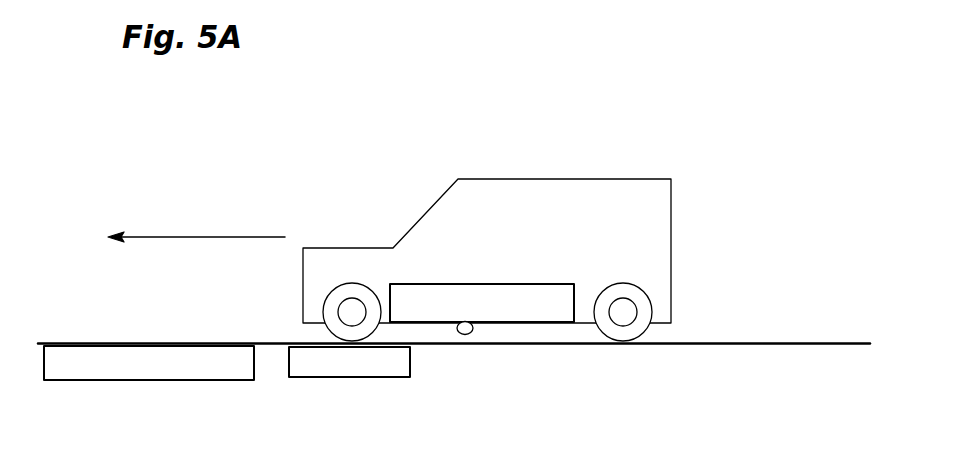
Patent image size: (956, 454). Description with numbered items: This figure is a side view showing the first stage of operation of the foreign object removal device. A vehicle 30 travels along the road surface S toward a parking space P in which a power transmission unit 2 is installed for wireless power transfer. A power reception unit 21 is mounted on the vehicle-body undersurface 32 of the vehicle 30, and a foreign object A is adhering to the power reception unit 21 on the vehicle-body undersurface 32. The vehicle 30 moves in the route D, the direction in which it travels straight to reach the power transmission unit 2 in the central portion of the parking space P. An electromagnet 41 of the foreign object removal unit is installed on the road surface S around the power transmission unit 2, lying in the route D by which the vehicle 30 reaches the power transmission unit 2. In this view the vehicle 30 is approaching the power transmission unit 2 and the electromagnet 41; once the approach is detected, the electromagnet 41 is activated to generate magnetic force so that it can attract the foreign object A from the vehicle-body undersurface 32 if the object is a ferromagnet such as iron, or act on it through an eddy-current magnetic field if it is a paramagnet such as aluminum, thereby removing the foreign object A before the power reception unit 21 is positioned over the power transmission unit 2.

The power transmission unit 2 is at (192, 380).
The power reception unit 21 is at (489, 283).
The vehicle 30 is at (671, 235).
The vehicle-body undersurface 32 is at (660, 328).
The electromagnet 41 is at (328, 377).
The foreign object A is at (466, 337).
The route D is at (203, 236).
The parking space P is at (82, 311).
The road surface S is at (833, 343).